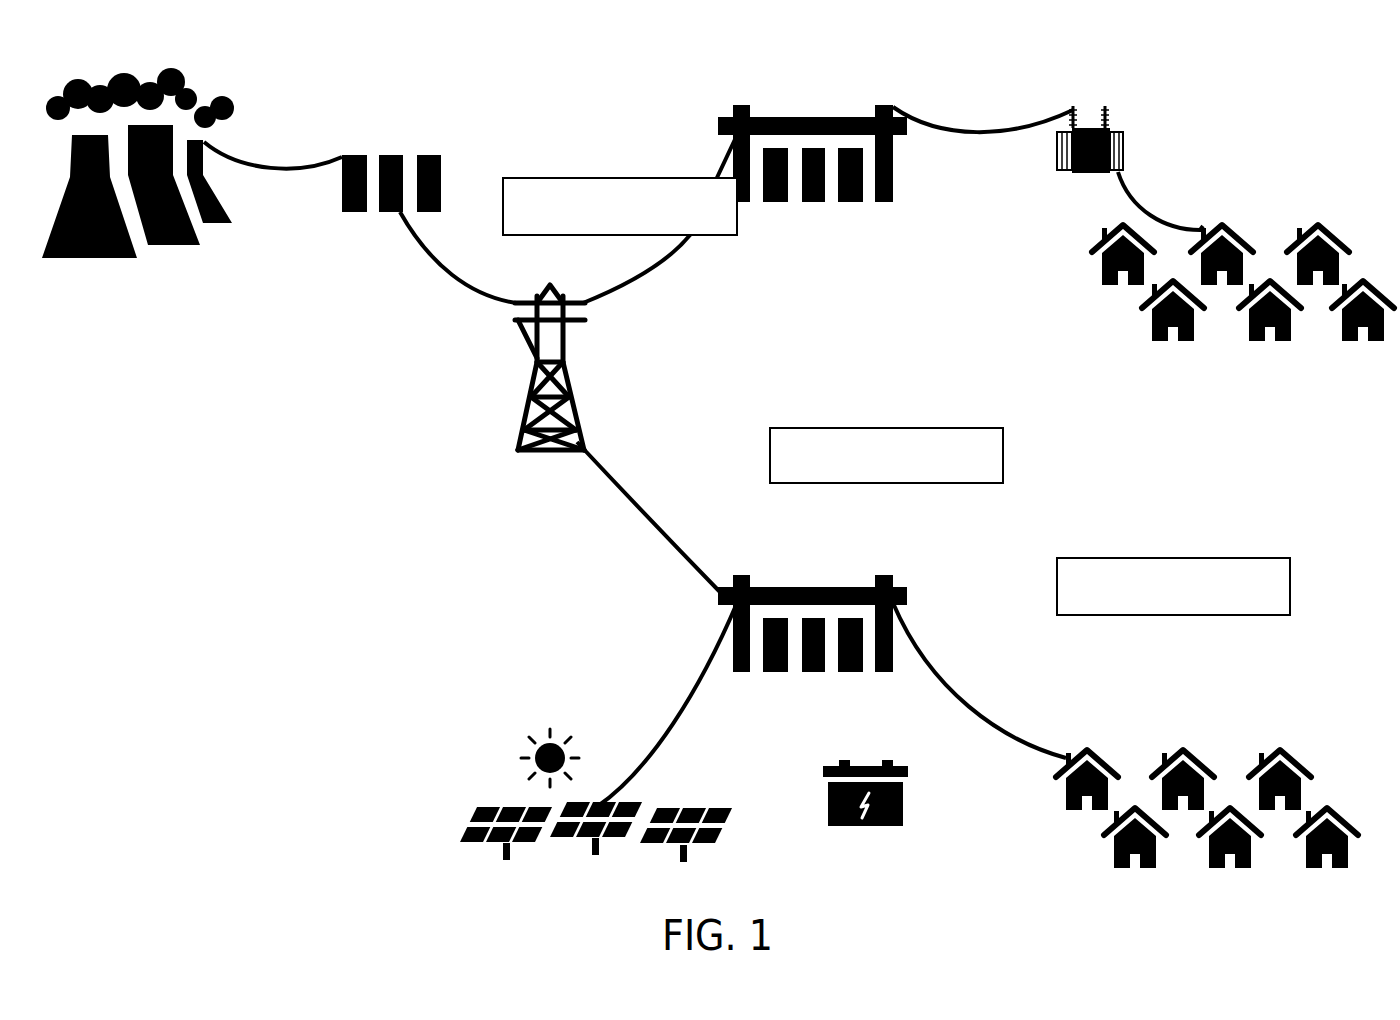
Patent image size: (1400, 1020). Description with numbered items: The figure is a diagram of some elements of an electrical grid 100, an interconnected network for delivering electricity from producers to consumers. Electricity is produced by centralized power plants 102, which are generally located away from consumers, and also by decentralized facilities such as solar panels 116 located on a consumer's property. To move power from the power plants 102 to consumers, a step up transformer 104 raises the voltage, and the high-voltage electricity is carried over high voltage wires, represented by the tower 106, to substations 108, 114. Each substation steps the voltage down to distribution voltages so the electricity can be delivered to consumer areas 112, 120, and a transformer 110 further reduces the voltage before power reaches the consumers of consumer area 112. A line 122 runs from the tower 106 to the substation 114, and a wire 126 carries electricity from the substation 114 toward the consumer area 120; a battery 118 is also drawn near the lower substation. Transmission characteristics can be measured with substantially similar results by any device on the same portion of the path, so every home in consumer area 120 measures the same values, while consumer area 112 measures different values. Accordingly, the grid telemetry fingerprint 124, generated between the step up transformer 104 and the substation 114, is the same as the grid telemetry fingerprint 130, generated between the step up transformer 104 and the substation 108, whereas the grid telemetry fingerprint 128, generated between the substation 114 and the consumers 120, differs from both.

The electrical grid 100 is at (226, 579).
The centralized power plants 102 is at (142, 299).
The step up transformer 104 is at (460, 160).
The tower 106 is at (610, 388).
The substation 108 is at (871, 223).
The transformer 110 is at (1144, 114).
The consumer area 112 is at (1265, 206).
The substation 114 is at (937, 575).
The solar panels 116 is at (488, 759).
The battery energy storage 118 is at (919, 828).
The consumer area 120 is at (1207, 720).
The transmission line 122 is at (674, 499).
The grid telemetry fingerprint 124 is at (886, 455).
The wire 126 is at (1004, 686).
The grid telemetry fingerprint 128 is at (1173, 586).
The grid telemetry fingerprint 130 is at (620, 206).